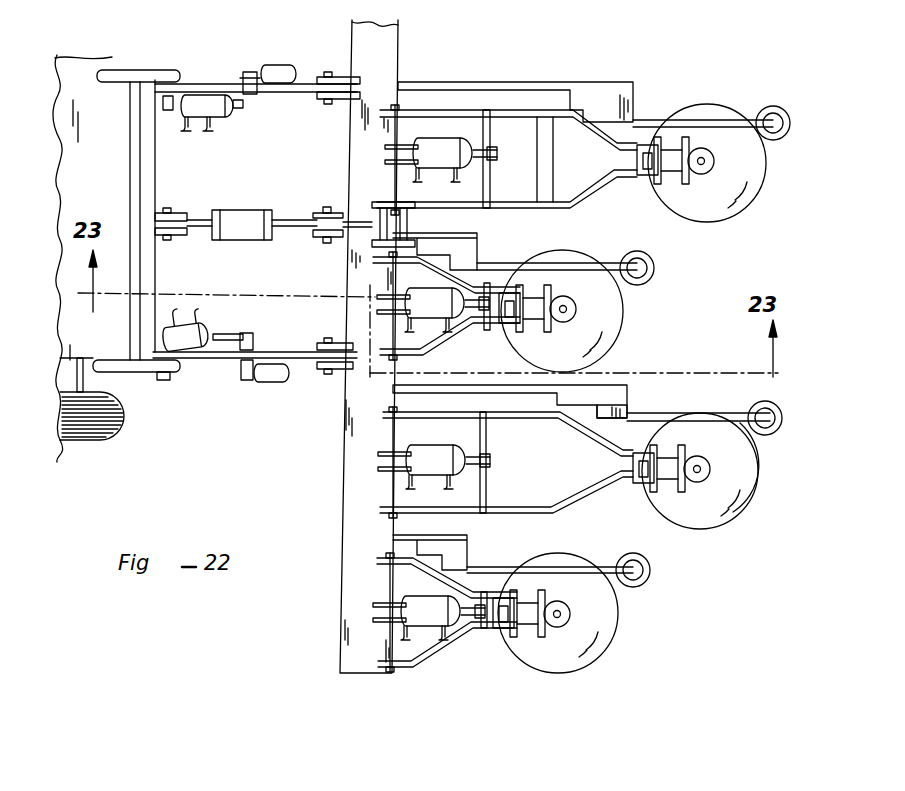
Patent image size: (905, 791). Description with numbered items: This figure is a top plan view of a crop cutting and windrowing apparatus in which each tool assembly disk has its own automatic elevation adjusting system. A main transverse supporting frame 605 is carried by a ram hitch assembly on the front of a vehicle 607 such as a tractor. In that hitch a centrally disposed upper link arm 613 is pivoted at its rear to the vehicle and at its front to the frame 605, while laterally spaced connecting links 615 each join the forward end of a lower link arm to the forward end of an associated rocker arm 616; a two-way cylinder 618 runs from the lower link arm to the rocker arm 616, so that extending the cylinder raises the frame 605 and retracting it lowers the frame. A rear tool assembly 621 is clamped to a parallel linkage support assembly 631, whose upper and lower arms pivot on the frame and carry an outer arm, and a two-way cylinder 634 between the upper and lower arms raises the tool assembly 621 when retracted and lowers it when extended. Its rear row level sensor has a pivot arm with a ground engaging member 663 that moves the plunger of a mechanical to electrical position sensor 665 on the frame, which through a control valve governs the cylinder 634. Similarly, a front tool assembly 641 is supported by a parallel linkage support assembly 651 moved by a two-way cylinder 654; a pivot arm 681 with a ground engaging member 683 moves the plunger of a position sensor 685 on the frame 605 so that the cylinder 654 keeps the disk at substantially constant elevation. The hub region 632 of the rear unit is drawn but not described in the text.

The main transverse supporting frame 605 is at (340, 480).
The vehicle 607 is at (117, 172).
The upper link arm 613 is at (233, 220).
The connecting links 615 is at (275, 70).
The rocker arm 616 is at (203, 87).
The two-way cylinder 618 is at (207, 333).
The rear tool assembly 621 is at (558, 622).
The parallel linkage support assembly 631 is at (441, 660).
The hub 632 is at (503, 640).
The two-way cylinder 634 is at (410, 627).
The front tool assembly 641 is at (714, 447).
The parallel linkage support assembly 651 is at (577, 506).
The two-way cylinder 654 is at (453, 462).
The ground engaging member 663 is at (645, 580).
The mechanical to electrical position sensor 665 is at (470, 565).
The pivot arm 681 is at (710, 413).
The ground engaging member 683 is at (748, 493).
The position sensor 685 is at (613, 403).